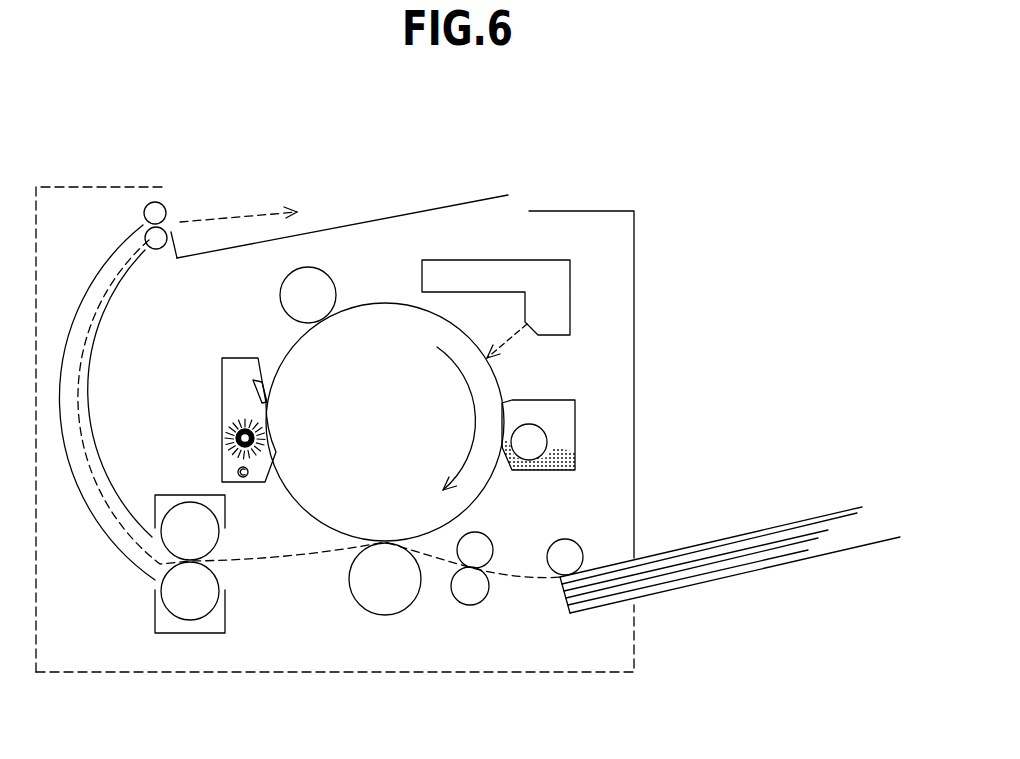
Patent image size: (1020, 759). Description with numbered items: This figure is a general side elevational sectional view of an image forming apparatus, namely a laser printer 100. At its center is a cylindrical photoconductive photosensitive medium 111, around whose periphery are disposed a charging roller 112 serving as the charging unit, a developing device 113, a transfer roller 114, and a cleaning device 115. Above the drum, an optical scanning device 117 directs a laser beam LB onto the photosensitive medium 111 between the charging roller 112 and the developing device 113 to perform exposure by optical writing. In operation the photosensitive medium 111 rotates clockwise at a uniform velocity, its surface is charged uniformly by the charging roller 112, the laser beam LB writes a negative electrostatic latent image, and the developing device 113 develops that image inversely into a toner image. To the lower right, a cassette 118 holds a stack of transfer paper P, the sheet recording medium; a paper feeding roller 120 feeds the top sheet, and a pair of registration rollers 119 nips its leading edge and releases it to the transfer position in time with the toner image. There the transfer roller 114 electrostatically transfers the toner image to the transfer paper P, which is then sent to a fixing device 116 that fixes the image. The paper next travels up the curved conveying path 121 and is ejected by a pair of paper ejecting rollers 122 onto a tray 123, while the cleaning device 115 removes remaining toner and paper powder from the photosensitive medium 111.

The laser printer 100 is at (655, 232).
The photosensitive medium 111 is at (373, 316).
The charging roller 112 is at (291, 292).
The developing device 113 is at (563, 399).
The transfer roller 114 is at (388, 605).
The cleaning device 115 is at (233, 358).
The fixing device 116 is at (225, 613).
The optical scanning device 117 is at (495, 260).
The cassette 118 is at (702, 584).
The pair of registration rollers 119 is at (480, 584).
The paper feeding roller 120 is at (567, 551).
The conveying path 121 is at (57, 381).
The pair of paper ejecting rollers 122 is at (163, 232).
The tray 123 is at (422, 212).
The laser beam LB is at (508, 341).
The transfer paper P is at (695, 557).